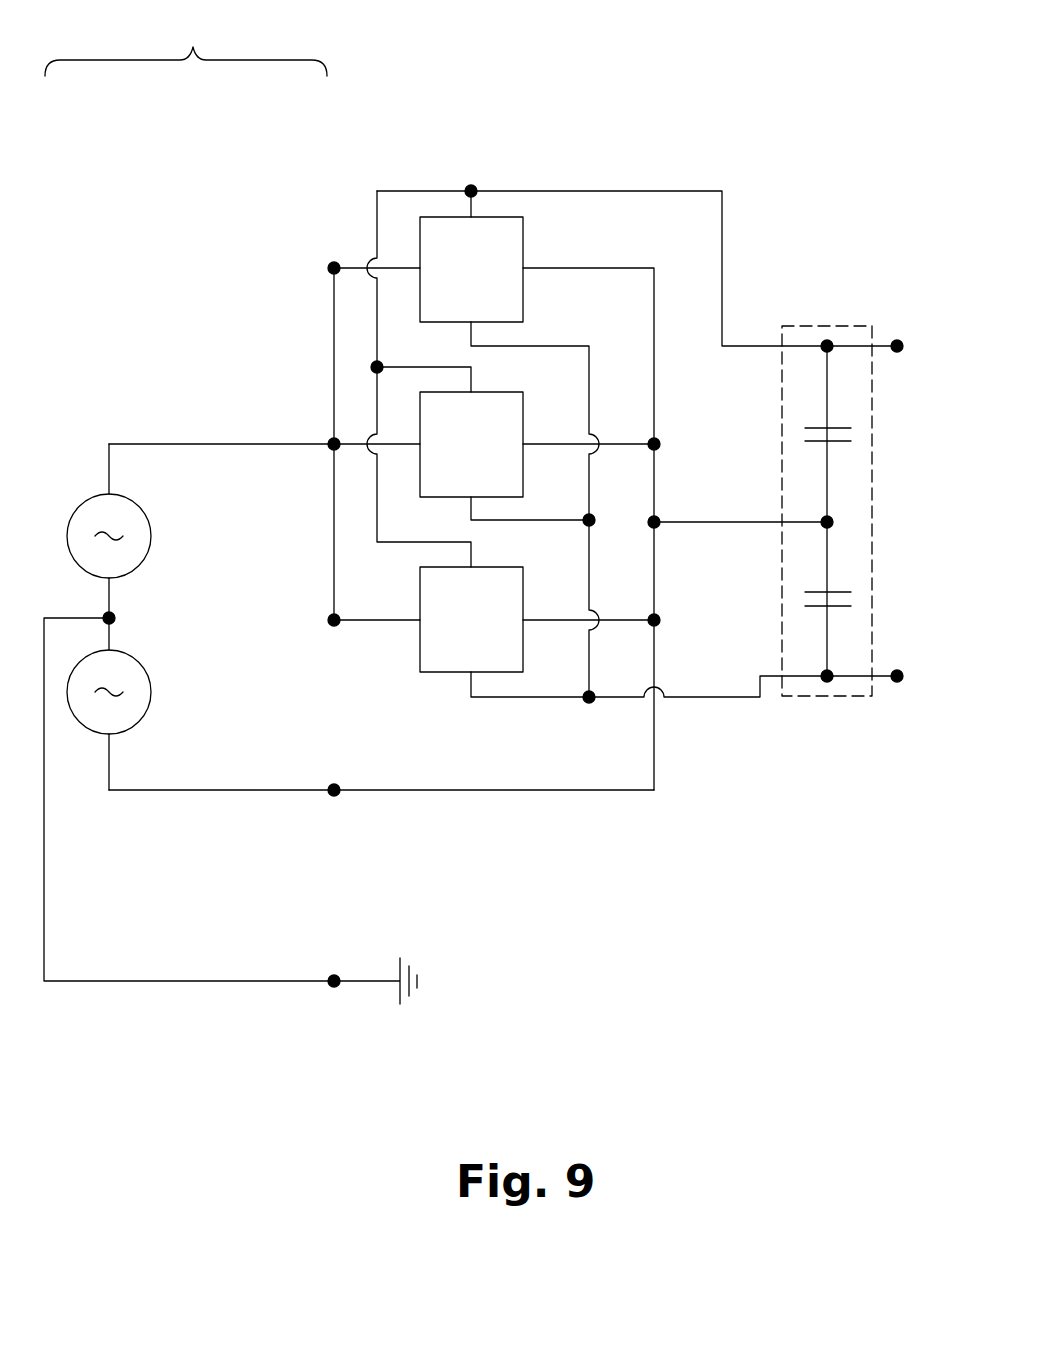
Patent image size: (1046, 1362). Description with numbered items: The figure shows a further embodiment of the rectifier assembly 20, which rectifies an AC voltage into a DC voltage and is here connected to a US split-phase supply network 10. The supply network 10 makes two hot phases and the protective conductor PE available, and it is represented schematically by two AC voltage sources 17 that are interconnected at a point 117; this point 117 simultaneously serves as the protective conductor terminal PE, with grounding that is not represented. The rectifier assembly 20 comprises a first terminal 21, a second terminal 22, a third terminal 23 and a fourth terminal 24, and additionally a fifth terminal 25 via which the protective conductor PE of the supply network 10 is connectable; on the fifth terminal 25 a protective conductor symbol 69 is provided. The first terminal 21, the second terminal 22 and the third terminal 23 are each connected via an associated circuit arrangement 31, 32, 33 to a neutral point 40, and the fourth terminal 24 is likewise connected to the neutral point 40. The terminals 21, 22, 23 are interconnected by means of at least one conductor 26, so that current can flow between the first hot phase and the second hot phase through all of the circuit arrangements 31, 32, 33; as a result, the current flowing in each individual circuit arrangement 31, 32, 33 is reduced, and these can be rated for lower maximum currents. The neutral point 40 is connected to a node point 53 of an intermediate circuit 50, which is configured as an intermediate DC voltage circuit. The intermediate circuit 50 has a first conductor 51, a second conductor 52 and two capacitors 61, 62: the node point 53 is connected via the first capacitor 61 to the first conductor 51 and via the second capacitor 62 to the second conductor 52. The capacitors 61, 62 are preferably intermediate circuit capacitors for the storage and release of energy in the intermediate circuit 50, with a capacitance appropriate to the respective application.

The supply network 10 is at (186, 43).
The AC voltage source 17 is at (151, 551).
The point 117 is at (113, 614).
The rectifier assembly 20 is at (604, 451).
The first terminal 21 is at (334, 262).
The second terminal 22 is at (334, 439).
The third terminal 23 is at (334, 615).
The fourth terminal 24 is at (334, 785).
The fifth terminal 25 is at (334, 976).
The conductor 26 is at (334, 360).
The circuit arrangement 31 is at (471, 269).
The circuit arrangement 32 is at (471, 444).
The circuit arrangement 33 is at (471, 619).
The neutral point 40 is at (659, 517).
The intermediate circuit 50 is at (870, 515).
The first conductor 51 is at (863, 346).
The second conductor 52 is at (863, 678).
The node point 53 is at (833, 524).
The first capacitor 61 is at (845, 428).
The second capacitor 62 is at (847, 608).
The protective conductor symbol 69 is at (413, 992).